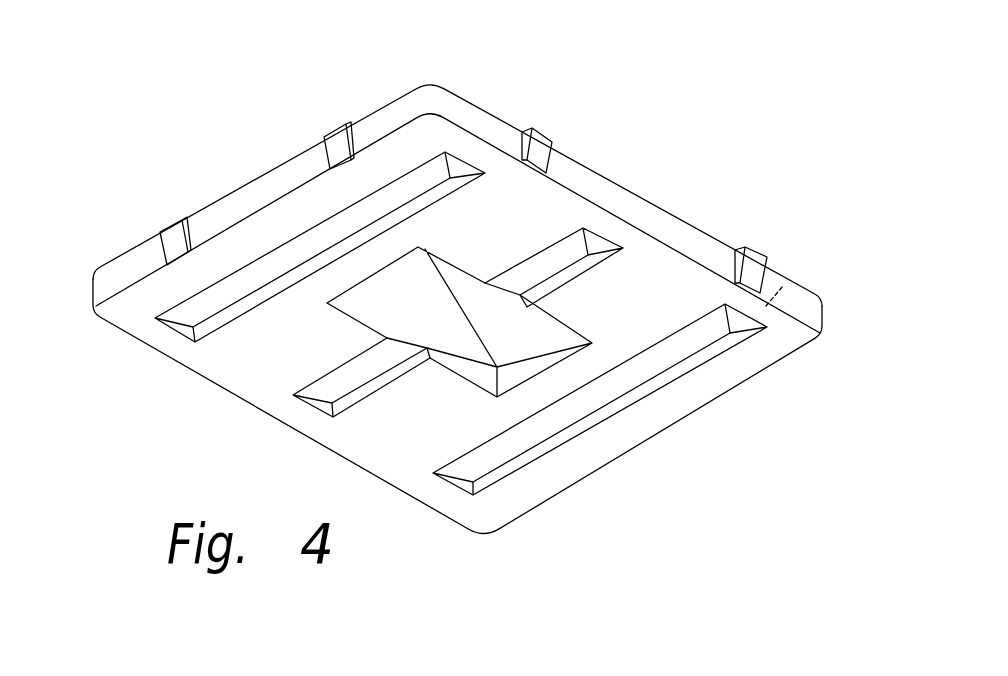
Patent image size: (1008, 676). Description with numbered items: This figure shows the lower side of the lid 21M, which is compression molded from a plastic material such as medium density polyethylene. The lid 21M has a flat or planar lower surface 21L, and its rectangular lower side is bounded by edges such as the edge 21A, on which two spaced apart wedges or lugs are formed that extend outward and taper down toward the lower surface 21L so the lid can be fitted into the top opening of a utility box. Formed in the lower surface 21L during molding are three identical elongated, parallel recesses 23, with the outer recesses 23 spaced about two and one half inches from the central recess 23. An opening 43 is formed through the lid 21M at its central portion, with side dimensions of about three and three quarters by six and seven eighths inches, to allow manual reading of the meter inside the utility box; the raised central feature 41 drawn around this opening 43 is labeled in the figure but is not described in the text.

The edge 21A is at (224, 161).
The lower surface 21L is at (552, 203).
The lid 21M is at (182, 383).
The recess 23 is at (457, 170).
The central ramp boss 41 is at (518, 333).
The opening 43 is at (395, 286).